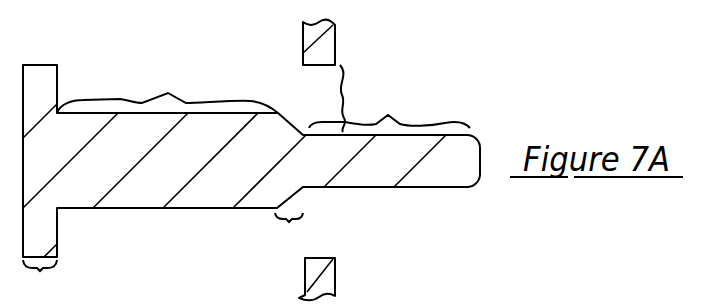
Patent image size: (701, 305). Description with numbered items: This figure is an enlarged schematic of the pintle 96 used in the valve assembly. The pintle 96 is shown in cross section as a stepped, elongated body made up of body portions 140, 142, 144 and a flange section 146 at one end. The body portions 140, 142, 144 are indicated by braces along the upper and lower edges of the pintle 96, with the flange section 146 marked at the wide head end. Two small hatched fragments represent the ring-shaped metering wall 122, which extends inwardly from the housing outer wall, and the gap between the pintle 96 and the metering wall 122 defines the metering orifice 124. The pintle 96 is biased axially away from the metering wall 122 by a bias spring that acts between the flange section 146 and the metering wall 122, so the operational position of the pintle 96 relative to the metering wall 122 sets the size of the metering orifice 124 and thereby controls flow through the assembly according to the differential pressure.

The pintle 96 is at (113, 170).
The metering wall 122 is at (322, 43).
The metering orifice 124 is at (345, 97).
The body portion 140 is at (389, 107).
The body portion 142 is at (289, 230).
The body portion 144 is at (167, 91).
The flange section 146 is at (39, 279).